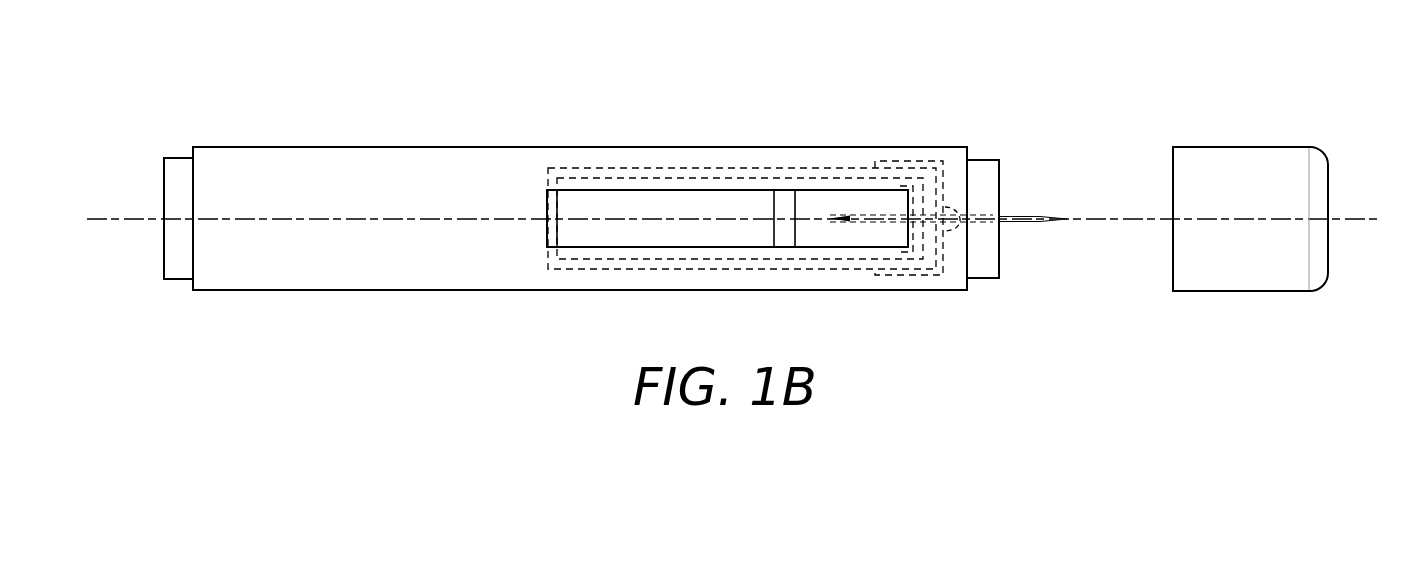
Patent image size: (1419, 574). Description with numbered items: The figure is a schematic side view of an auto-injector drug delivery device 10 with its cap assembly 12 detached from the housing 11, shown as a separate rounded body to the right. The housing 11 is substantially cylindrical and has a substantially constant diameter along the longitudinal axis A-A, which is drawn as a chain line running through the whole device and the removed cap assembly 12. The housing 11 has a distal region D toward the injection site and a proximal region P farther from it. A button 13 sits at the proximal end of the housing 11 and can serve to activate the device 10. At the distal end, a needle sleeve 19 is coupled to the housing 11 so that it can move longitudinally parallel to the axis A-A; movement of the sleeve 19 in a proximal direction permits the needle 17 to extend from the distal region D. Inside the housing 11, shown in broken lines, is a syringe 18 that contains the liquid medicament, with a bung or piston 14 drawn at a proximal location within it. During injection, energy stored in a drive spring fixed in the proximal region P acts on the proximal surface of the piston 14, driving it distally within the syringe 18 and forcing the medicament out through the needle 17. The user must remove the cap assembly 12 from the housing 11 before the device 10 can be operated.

The drug delivery device 10 is at (931, 104).
The housing 11 is at (777, 156).
The cap assembly 12 is at (1243, 156).
The button 13 is at (177, 271).
The piston 14 is at (785, 237).
The needle 17 is at (1044, 212).
The syringe 18 is at (679, 272).
The needle sleeve 19 is at (991, 170).
The longitudinal axis A is at (732, 220).
The proximal region P is at (212, 282).
The distal region D is at (953, 283).